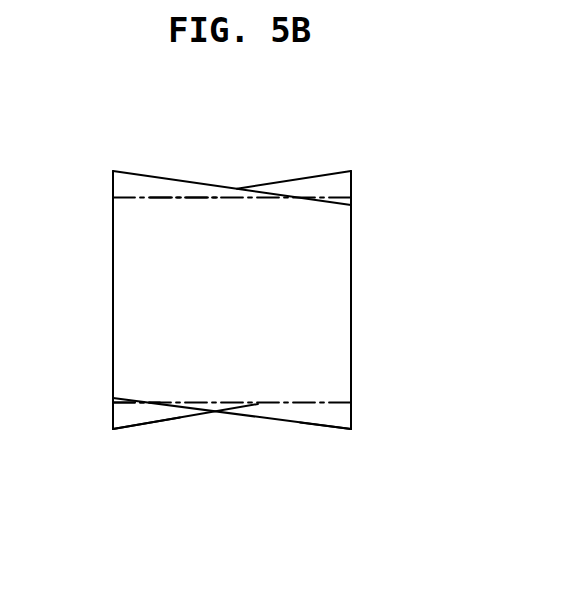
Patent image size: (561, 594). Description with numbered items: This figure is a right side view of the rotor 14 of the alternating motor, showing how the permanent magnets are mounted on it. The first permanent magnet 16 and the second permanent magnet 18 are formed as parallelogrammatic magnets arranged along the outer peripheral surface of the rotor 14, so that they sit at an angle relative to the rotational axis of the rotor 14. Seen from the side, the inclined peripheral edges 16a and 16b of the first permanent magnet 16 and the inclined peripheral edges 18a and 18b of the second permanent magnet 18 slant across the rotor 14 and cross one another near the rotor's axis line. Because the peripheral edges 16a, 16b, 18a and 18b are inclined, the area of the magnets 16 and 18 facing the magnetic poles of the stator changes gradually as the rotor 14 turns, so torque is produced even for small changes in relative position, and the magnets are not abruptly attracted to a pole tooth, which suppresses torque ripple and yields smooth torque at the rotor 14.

The rotor 14 is at (185, 198).
The first permanent magnet 16 is at (329, 421).
The angled peripheral edge of the first permanent magnet 16a is at (282, 423).
The angled peripheral edge of the first permanent magnet 16b is at (224, 179).
The second permanent magnet 18 is at (133, 421).
The angled peripheral edge of the second permanent magnet 18a is at (305, 189).
The angled peripheral edge of the second permanent magnet 18b is at (191, 418).